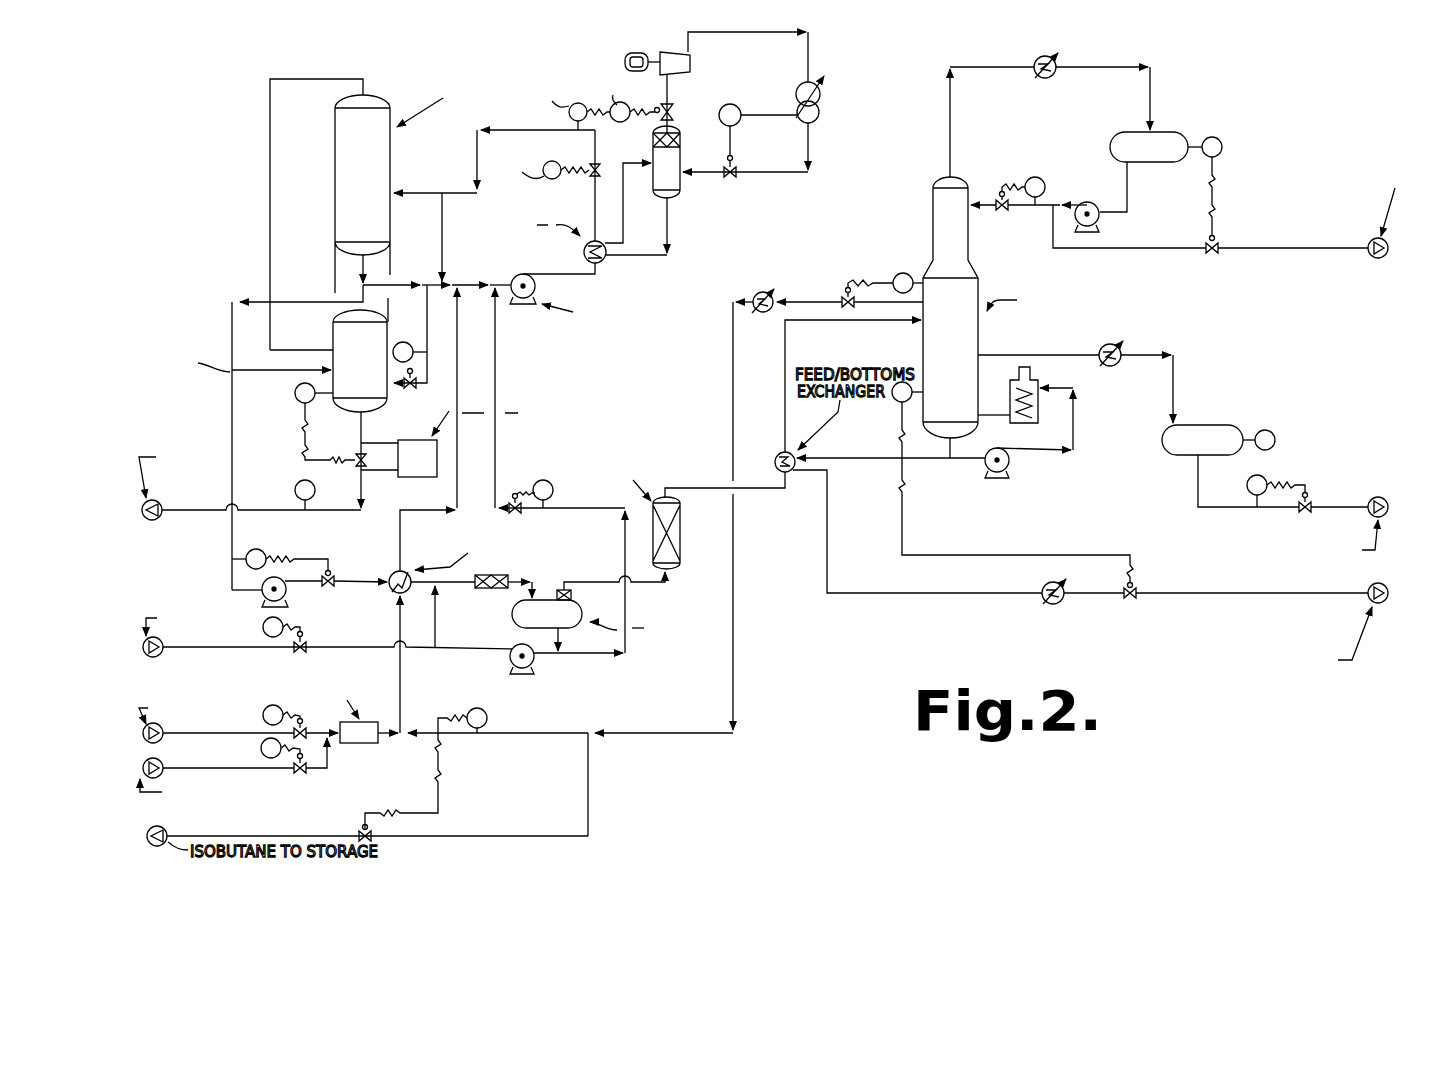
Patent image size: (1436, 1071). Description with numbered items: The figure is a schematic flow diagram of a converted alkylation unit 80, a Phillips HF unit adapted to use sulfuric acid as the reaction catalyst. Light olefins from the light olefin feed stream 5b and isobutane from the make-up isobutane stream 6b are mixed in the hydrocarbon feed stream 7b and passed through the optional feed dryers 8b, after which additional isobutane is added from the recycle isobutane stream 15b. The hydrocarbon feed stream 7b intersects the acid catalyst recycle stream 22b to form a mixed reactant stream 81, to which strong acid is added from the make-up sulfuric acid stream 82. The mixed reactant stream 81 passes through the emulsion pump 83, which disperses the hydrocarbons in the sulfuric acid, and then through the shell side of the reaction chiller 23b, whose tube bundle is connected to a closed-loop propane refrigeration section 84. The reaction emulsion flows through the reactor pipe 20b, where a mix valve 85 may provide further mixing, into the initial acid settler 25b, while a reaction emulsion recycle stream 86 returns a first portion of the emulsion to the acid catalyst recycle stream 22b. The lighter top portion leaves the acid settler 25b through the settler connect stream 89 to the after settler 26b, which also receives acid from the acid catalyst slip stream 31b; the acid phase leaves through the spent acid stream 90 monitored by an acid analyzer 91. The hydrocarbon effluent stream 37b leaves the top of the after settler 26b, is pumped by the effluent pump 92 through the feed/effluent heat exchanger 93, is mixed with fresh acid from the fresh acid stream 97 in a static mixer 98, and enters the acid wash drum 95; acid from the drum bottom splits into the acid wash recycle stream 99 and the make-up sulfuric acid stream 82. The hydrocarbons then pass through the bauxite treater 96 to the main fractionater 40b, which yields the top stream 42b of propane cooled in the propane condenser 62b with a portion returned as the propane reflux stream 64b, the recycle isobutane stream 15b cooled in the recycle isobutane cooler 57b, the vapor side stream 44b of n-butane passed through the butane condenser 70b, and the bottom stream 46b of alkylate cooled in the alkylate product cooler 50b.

The light olefin feed stream 5b is at (185, 736).
The make-up isobutane stream 6b is at (329, 770).
The dry hydrocarbon feed stream 7b is at (457, 374).
The feed dryers 8b is at (378, 742).
The recycle isobutane stream 15b is at (528, 733).
The reactor pipe 20b is at (594, 153).
The acid catalyst recycle stream 22b is at (405, 284).
The reaction chiller 23b is at (600, 263).
The initial acid settler 25b is at (334, 158).
The after settler 26b is at (388, 403).
The acid catalyst slip stream 31b is at (406, 328).
The hydrocarbon effluent stream 37b is at (232, 414).
The main fractionater 40b is at (933, 233).
The top stream 42b is at (950, 133).
The vapor side stream 44b is at (1040, 355).
The bottom stream 46b is at (950, 447).
The alkylate product cooler 50b is at (1068, 604).
The recycle isobutane cooler 57b is at (753, 294).
The propane condenser 62b is at (1040, 56).
The propane reflux stream 64b is at (1017, 208).
The butane condenser 70b is at (1120, 362).
The converted alkylation unit 80 is at (799, 698).
The mixed reactant stream 81 is at (475, 284).
The make-up sulfuric acid stream 82 is at (496, 342).
The emulsion pump 83 is at (524, 300).
The closed-loop propane refrigeration section 84 is at (572, 66).
The mix valve 85 is at (606, 168).
The reaction emulsion recycle stream 86 is at (441, 228).
The settler connect stream 89 is at (270, 208).
The spent acid stream 90 is at (361, 433).
The acid analyzer 91 is at (429, 476).
The effluent pump 92 is at (287, 597).
The feed/effluent heat exchanger 93 is at (392, 566).
The acid wash drum 95 is at (512, 614).
The bauxite treater 96 is at (681, 545).
The fresh acid stream 97 is at (225, 649).
The static mixer 98 is at (497, 572).
The acid wash recycle stream 99 is at (433, 630).